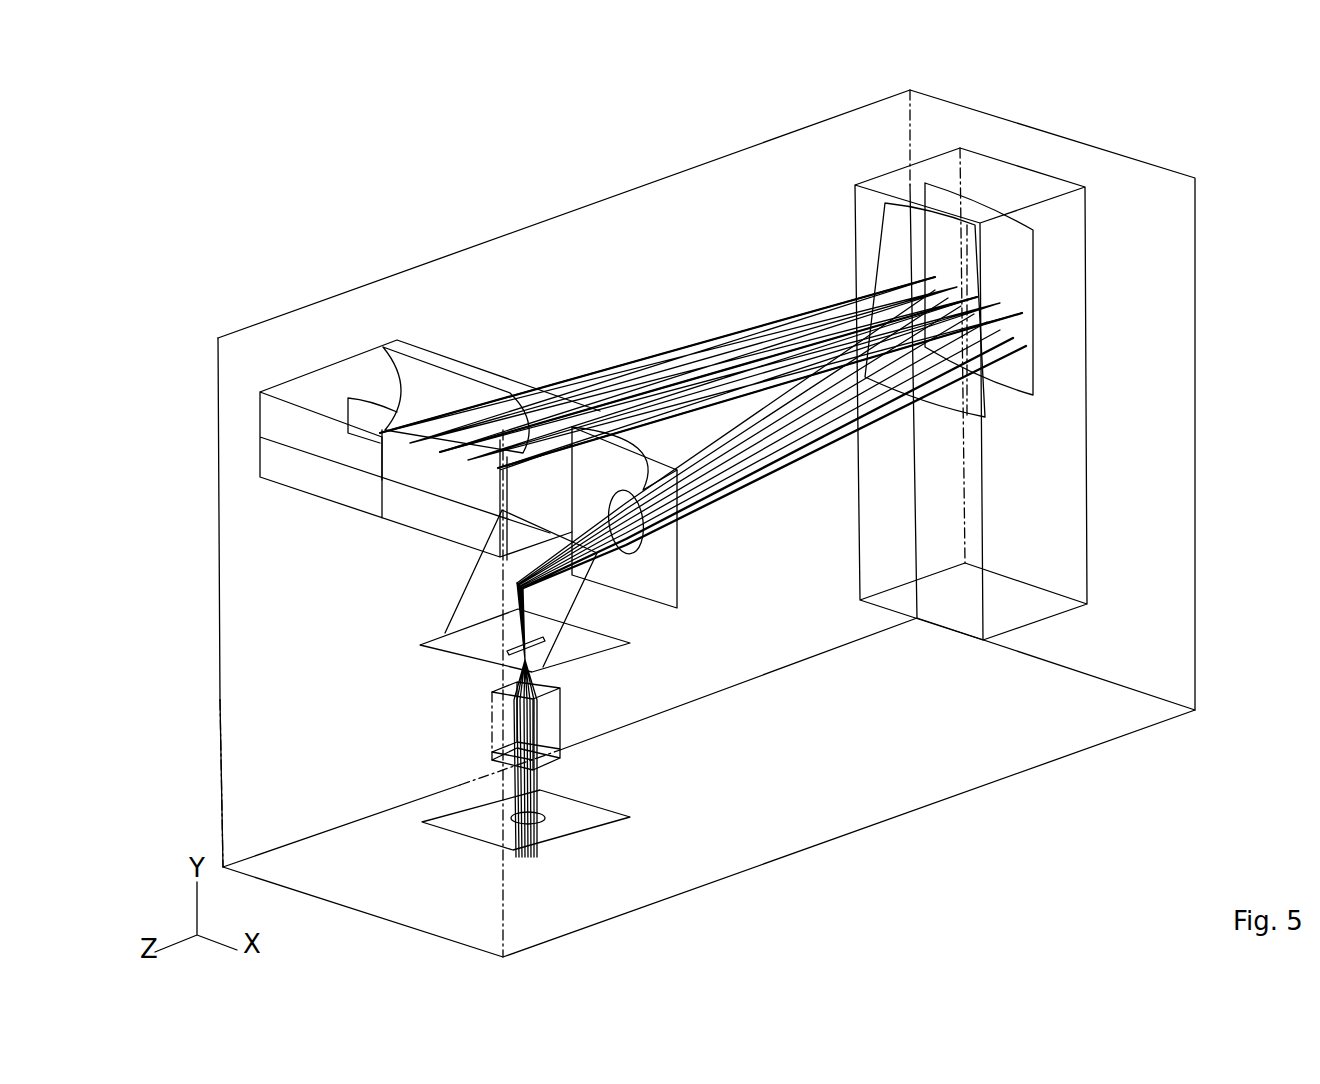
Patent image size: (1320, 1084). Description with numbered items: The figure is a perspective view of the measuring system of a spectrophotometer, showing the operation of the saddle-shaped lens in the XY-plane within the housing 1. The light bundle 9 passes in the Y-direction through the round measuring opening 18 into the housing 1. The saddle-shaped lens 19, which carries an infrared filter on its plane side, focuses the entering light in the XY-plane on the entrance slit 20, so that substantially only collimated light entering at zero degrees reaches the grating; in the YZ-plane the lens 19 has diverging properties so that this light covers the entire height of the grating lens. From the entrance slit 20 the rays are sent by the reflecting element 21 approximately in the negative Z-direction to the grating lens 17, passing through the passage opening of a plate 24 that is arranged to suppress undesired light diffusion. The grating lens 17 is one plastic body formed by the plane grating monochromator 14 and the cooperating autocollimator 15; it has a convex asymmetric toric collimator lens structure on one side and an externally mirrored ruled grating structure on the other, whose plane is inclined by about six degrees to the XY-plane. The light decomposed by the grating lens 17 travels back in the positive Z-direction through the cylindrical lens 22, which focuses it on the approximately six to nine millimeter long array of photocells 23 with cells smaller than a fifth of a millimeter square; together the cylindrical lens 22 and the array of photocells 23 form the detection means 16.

The housing 1 is at (983, 787).
The light bundle 9 is at (543, 805).
The plane grating monochromator 14 is at (1037, 295).
The autocollimator 15 is at (897, 238).
The detection means 16 is at (362, 378).
The grating lens 17 is at (1005, 355).
The round measuring opening 18 is at (512, 823).
The saddle-shaped lens 19 is at (490, 722).
The entrance slit 20 is at (543, 647).
The reflecting element 21 is at (447, 630).
The cylindrical lens 22 is at (458, 378).
The array of photocells 23 is at (367, 433).
The plate 24 is at (660, 588).